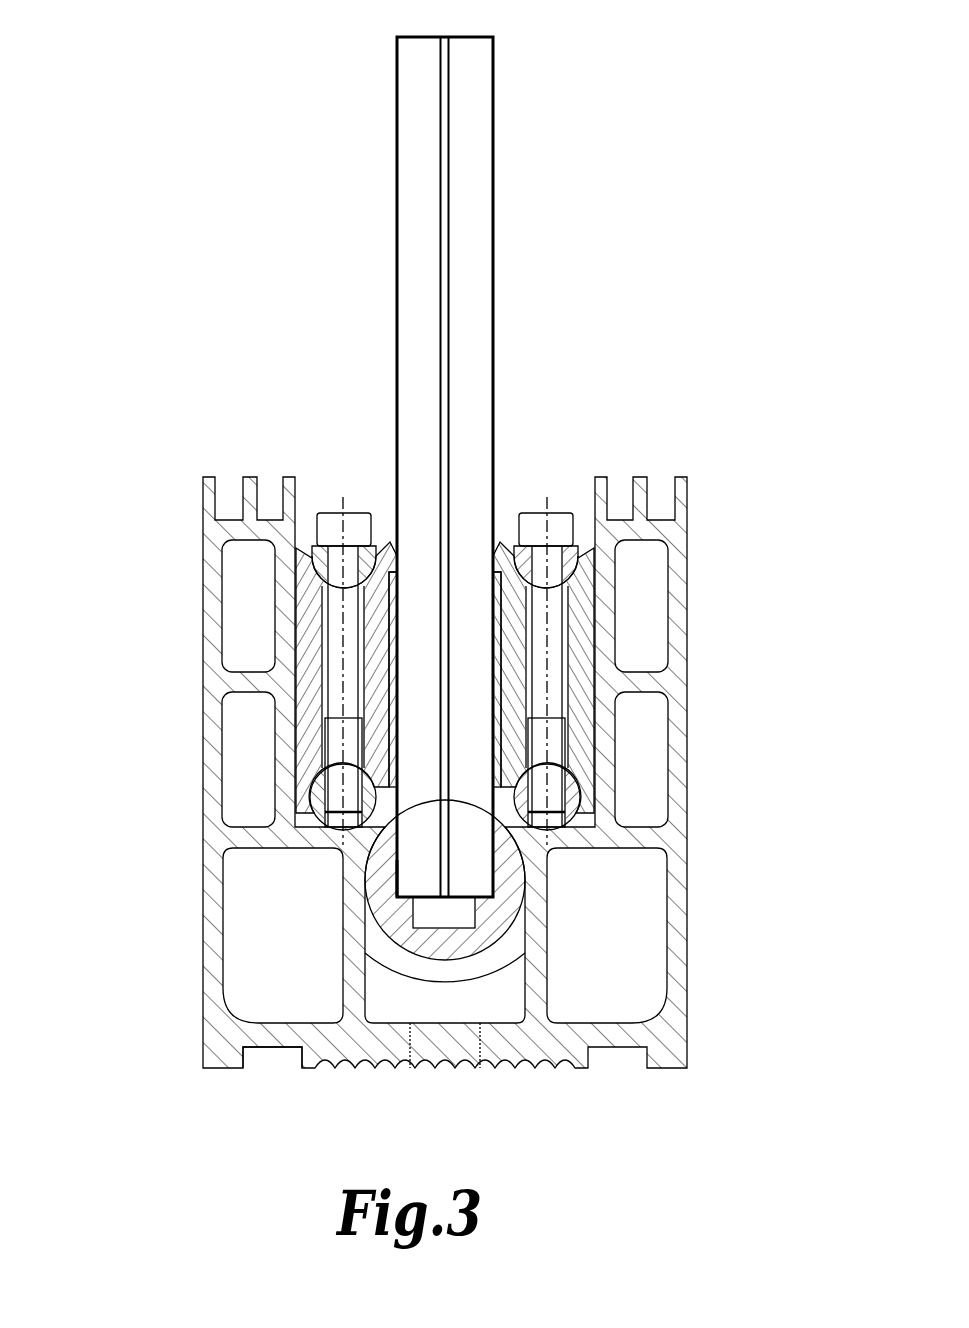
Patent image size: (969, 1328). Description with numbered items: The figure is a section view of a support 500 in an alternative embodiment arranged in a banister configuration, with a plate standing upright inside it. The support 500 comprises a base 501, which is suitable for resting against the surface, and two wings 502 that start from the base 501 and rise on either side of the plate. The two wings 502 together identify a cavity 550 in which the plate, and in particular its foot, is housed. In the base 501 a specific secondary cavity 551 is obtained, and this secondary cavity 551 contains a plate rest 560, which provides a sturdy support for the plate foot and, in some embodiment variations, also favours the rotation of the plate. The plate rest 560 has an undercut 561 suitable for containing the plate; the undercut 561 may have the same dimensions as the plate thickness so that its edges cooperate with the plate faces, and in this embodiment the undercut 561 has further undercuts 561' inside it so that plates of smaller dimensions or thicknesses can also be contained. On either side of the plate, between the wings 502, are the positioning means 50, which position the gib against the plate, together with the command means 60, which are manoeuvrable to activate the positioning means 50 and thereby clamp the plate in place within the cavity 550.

The support 500 is at (167, 539).
The base 501 is at (276, 1036).
The wings 502 is at (223, 681).
The positioning means 50 is at (378, 535).
The command means 60 is at (327, 522).
The cavity 550 is at (568, 455).
The secondary cavity 551 is at (520, 825).
The plate rest 560 is at (452, 950).
The undercut 561 is at (399, 996).
The further undercuts 561' is at (573, 1005).